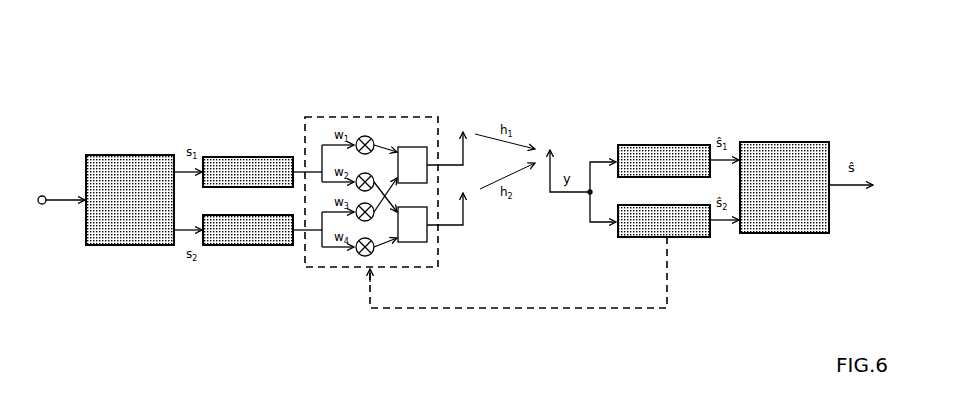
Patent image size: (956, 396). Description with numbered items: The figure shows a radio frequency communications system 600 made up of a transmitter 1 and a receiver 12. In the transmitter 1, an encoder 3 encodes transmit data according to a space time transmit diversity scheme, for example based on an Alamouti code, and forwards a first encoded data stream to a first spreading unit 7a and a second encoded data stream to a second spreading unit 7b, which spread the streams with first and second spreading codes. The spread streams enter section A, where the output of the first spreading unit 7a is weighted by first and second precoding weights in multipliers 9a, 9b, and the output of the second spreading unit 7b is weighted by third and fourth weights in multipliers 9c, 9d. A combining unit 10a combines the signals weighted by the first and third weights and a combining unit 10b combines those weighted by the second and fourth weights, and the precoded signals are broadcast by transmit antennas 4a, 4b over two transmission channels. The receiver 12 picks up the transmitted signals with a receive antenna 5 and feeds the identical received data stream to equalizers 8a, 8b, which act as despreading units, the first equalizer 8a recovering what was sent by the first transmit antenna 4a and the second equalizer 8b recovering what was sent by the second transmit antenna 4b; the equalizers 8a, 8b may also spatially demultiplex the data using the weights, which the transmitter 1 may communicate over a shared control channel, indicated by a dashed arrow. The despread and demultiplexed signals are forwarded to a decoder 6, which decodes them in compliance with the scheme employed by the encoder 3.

The radio frequency communications system 600 is at (100, 42).
The transmitter 1 is at (132, 112).
The encoder 3 is at (135, 232).
The first spreading unit 7a is at (230, 170).
The second spreading unit 7b is at (235, 242).
The section A is at (308, 116).
The first multiplier 9a is at (360, 136).
The second multiplier 9b is at (371, 176).
The third multiplier 9c is at (371, 219).
The fourth multiplier 9d is at (362, 256).
The first combining unit 10a is at (417, 145).
The second combining unit 10b is at (418, 245).
The first transmit antenna 4a is at (470, 140).
The second transmit antenna 4b is at (463, 228).
The receive antenna 5 is at (556, 152).
The receiver 12 is at (786, 108).
The first equalizer 8a is at (650, 162).
The second equalizer 8b is at (690, 234).
The decoder 6 is at (800, 228).